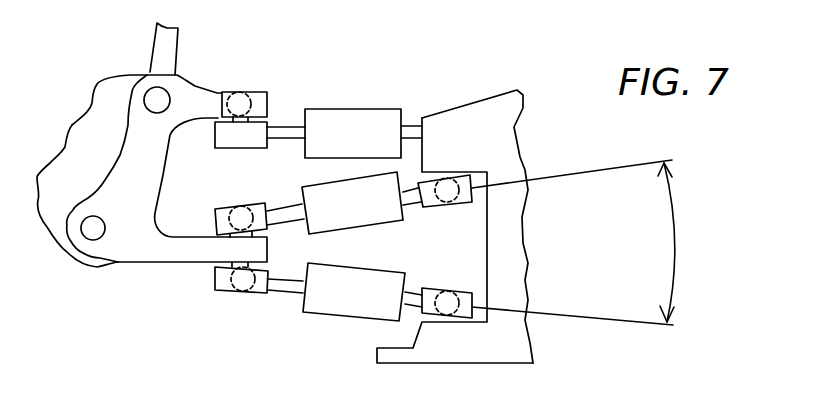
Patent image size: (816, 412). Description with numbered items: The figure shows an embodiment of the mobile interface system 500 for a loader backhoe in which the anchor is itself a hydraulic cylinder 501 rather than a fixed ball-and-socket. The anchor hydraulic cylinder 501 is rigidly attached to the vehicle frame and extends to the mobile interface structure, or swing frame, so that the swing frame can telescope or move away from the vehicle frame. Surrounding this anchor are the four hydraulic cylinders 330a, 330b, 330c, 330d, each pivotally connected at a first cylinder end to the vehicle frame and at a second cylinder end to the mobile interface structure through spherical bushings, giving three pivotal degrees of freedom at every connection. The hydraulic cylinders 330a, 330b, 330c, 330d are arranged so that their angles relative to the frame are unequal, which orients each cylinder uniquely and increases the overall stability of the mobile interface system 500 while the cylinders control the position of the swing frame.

The mobile interface system 500 is at (358, 75).
The hydraulic cylinder 501 is at (322, 109).
The hydraulic cylinder 330a is at (323, 183).
The hydraulic cylinder 330b is at (437, 191).
The hydraulic cylinder 330c is at (333, 313).
The hydraulic cylinder 330d is at (438, 303).